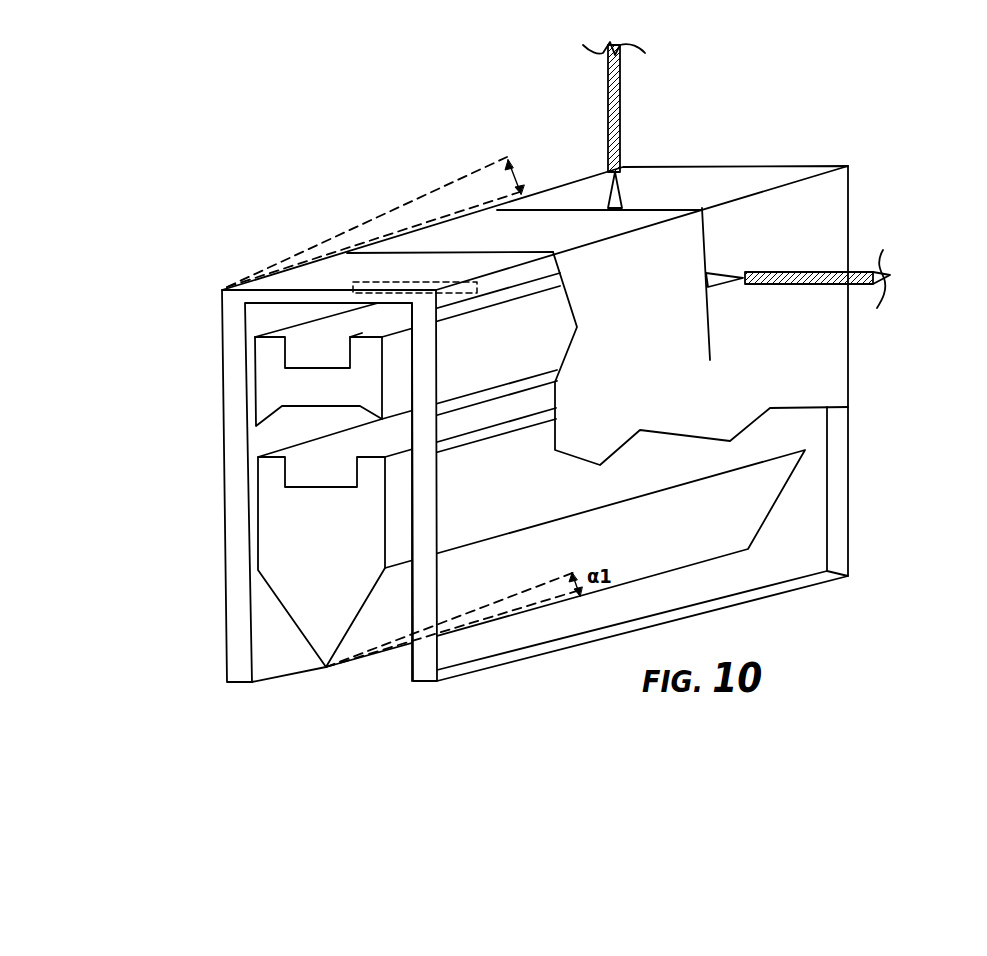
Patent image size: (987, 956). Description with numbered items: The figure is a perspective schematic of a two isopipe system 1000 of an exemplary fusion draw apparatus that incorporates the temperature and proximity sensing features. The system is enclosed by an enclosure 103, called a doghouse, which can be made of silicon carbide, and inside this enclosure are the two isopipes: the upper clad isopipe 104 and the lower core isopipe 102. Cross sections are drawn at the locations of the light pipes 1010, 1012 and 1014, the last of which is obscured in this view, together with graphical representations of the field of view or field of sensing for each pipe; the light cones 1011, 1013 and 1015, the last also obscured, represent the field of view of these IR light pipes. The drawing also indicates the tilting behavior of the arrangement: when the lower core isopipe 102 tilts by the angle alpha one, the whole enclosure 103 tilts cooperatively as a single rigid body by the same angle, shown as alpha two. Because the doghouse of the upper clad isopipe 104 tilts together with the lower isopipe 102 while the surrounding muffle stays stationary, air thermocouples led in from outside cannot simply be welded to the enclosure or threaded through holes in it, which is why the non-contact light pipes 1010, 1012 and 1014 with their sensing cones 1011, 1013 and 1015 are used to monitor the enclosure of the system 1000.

The two isopipe system 1000 is at (873, 143).
The core isopipe 102 is at (262, 532).
The enclosure 103 is at (222, 325).
The clad isopipe 104 is at (262, 388).
The light pipe 1010 is at (852, 285).
The light cone 1011 is at (708, 273).
The light pipe 1012 is at (618, 120).
The light cone 1013 is at (617, 200).
The light pipe 1014 is at (348, 277).
The light cone 1015 is at (487, 282).